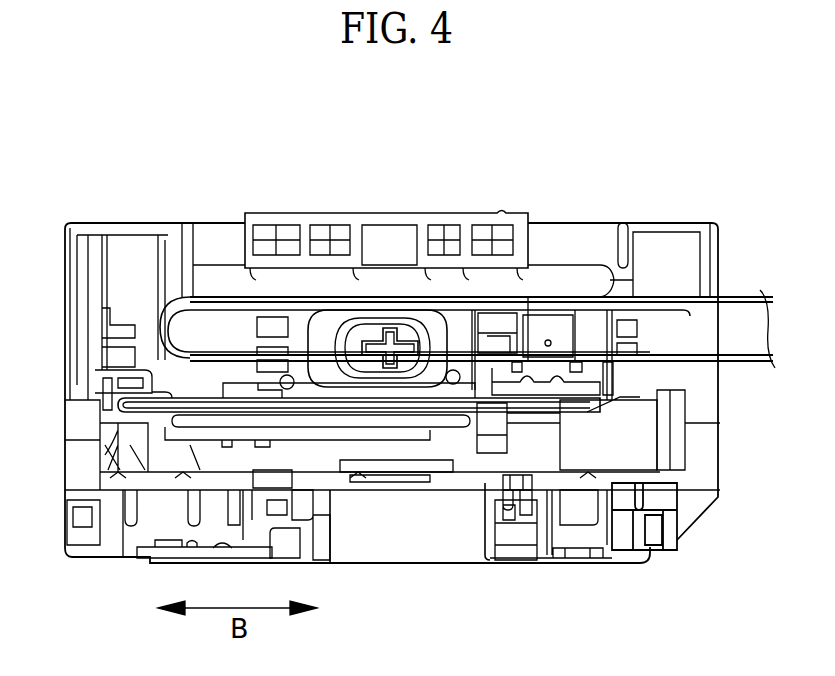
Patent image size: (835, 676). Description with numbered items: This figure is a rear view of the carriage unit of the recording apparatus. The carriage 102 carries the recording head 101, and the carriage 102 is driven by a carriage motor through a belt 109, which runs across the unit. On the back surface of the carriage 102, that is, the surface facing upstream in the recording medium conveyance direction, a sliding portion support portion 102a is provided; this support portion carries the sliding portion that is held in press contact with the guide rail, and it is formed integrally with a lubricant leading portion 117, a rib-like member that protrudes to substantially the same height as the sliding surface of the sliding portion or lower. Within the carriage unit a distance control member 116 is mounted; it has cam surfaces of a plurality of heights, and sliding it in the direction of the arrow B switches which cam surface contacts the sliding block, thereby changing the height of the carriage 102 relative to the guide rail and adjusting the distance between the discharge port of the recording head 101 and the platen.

The recording head 101 is at (430, 545).
The carriage 102 is at (357, 212).
The sliding portion support portion 102a is at (331, 497).
The belt 109 is at (727, 297).
The distance control member 116 is at (496, 424).
The lubricant leading portion 117 is at (102, 464).